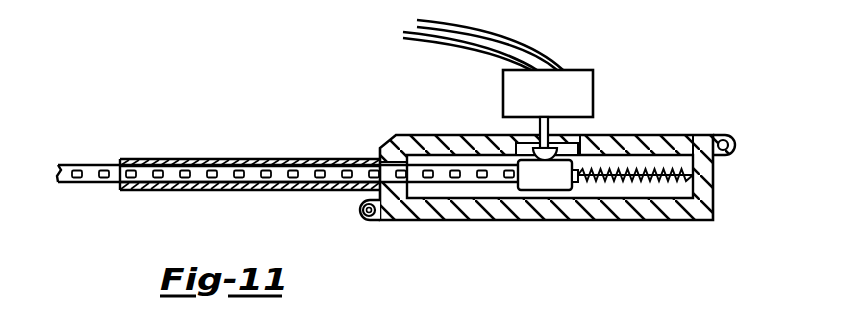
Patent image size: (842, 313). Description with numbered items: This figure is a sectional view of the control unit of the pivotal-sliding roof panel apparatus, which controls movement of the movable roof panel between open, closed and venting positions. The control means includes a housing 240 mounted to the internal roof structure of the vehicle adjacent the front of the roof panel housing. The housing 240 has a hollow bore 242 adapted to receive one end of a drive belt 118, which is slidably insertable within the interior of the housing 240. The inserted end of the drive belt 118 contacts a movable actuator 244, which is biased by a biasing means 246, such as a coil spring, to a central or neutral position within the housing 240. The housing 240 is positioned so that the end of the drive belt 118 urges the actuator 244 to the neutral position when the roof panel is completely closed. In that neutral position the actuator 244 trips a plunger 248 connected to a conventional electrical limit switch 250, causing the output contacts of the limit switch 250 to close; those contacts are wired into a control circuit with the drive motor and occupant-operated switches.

The drive belt 118 is at (212, 128).
The hollow bore 242 is at (341, 172).
The housing 240 is at (427, 114).
The plunger 248 is at (494, 143).
The limit switch 250 is at (596, 80).
The movable actuator 244 is at (587, 136).
The biasing means 246 is at (657, 170).